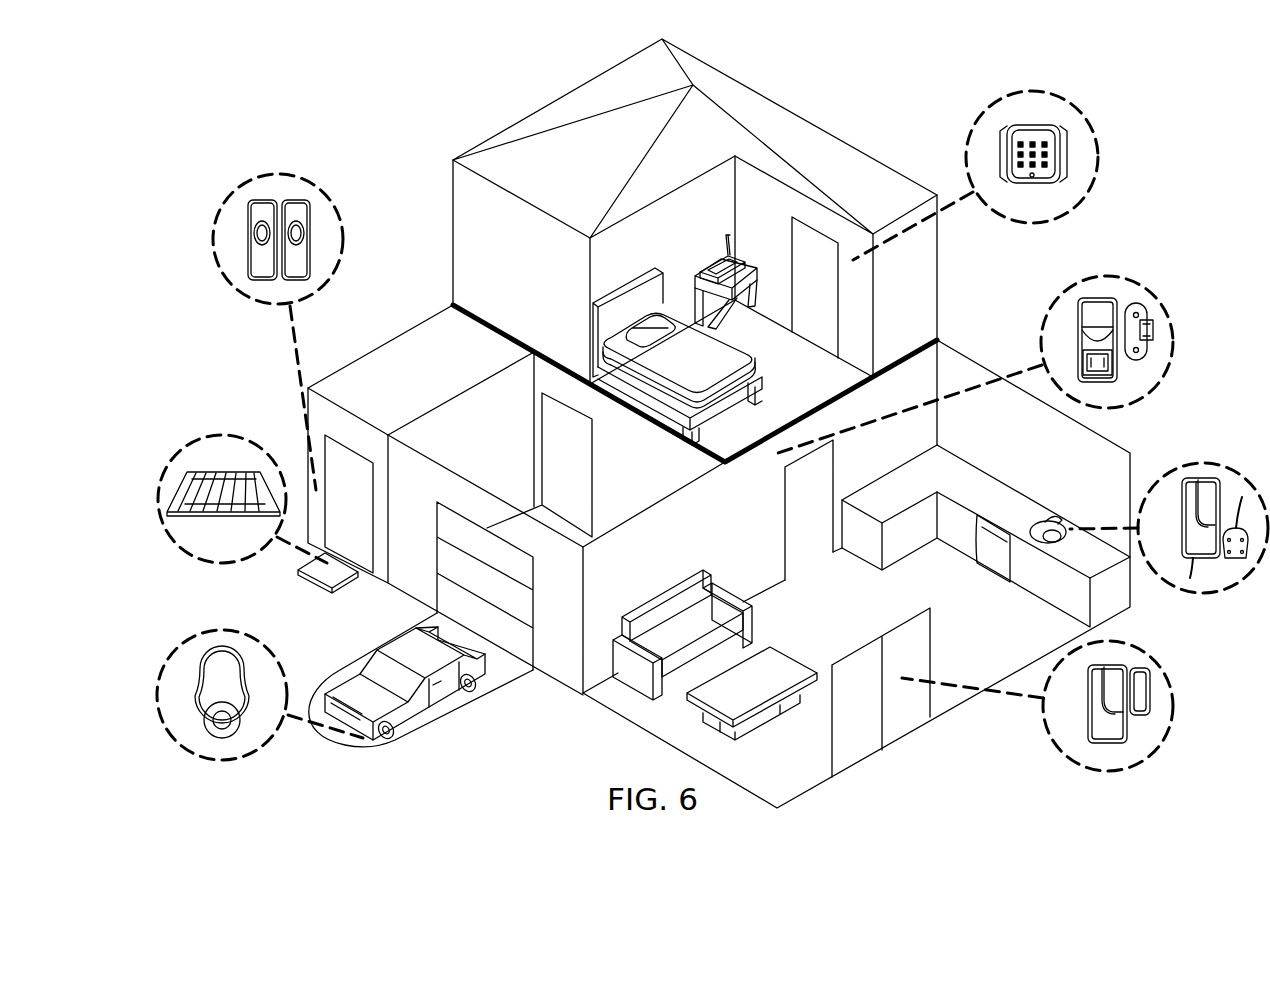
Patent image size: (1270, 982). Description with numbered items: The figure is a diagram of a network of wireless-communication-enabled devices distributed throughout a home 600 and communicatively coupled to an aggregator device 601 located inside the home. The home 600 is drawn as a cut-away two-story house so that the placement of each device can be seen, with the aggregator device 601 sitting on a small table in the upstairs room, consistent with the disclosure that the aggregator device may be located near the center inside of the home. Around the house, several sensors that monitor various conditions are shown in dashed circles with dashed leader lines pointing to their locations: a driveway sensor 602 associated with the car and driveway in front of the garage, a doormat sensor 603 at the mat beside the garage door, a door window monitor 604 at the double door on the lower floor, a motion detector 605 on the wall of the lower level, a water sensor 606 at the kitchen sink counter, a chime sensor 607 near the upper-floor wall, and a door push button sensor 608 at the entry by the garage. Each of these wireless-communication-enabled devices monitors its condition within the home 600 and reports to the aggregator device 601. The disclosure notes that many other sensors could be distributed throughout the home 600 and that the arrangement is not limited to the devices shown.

The home 600 is at (304, 87).
The aggregator device 601 is at (717, 260).
The driveway sensor 602 is at (270, 650).
The doormat sensor 603 is at (205, 435).
The door window monitor 604 is at (1173, 707).
The motion detector 605 is at (1173, 348).
The water sensor 606 is at (1215, 462).
The chime sensor 607 is at (1098, 150).
The door push button sensor 608 is at (213, 241).